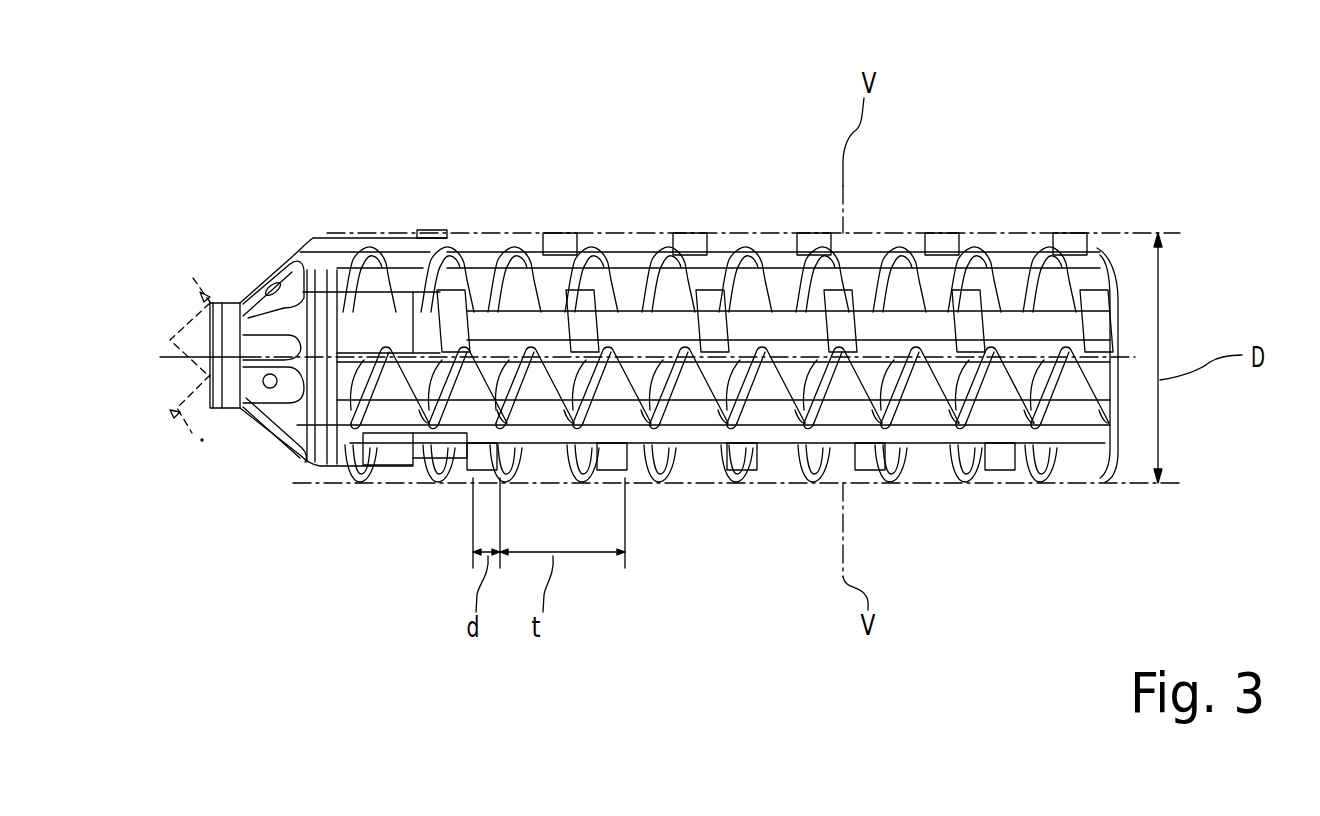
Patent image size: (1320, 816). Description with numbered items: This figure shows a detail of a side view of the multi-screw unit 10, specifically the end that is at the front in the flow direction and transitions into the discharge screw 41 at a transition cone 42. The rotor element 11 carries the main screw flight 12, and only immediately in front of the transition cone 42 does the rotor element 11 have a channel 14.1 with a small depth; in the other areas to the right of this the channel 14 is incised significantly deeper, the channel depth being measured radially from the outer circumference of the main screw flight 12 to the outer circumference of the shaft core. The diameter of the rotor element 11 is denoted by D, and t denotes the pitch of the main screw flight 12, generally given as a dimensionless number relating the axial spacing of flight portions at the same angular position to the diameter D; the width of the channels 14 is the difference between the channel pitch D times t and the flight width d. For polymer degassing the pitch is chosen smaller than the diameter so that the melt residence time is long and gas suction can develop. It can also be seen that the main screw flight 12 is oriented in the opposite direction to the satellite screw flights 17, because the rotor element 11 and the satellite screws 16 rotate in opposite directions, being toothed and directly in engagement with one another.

The multi-screw unit 10 is at (701, 275).
The rotor element 11 is at (690, 255).
The main screw flight 12 is at (775, 268).
The channel 14 is at (709, 189).
The channel 14.1 is at (401, 265).
The satellite screw 16 is at (727, 274).
The satellite screw flight 17 is at (730, 247).
The discharge screw 41 is at (189, 238).
The transition cone 42 is at (270, 265).